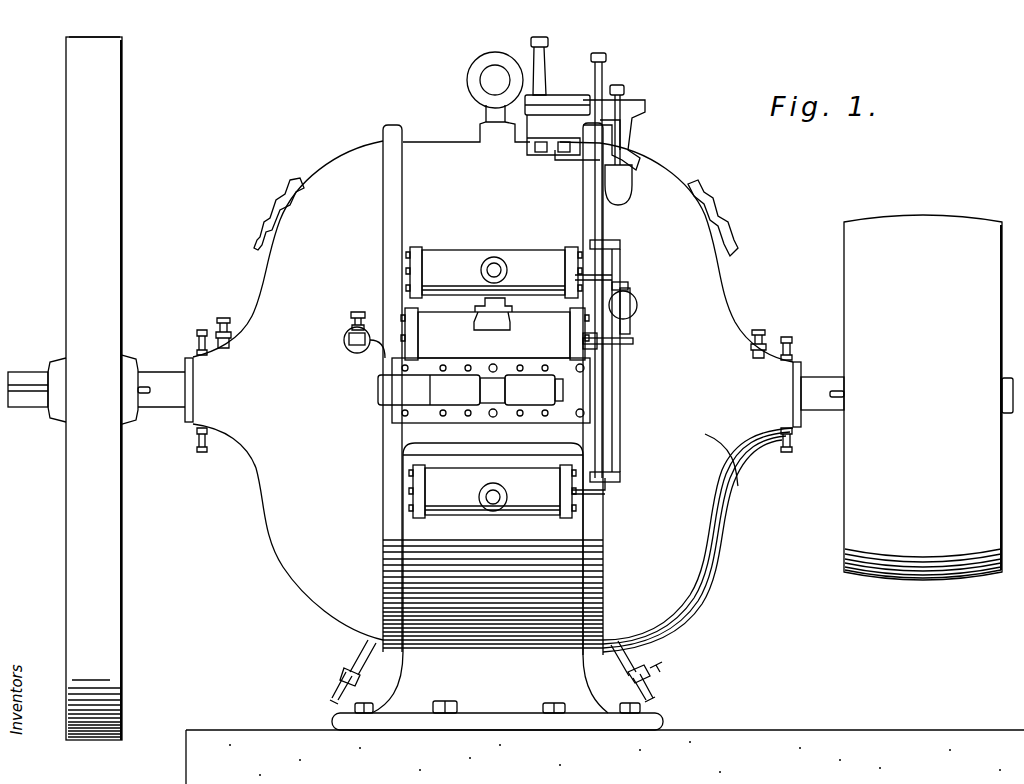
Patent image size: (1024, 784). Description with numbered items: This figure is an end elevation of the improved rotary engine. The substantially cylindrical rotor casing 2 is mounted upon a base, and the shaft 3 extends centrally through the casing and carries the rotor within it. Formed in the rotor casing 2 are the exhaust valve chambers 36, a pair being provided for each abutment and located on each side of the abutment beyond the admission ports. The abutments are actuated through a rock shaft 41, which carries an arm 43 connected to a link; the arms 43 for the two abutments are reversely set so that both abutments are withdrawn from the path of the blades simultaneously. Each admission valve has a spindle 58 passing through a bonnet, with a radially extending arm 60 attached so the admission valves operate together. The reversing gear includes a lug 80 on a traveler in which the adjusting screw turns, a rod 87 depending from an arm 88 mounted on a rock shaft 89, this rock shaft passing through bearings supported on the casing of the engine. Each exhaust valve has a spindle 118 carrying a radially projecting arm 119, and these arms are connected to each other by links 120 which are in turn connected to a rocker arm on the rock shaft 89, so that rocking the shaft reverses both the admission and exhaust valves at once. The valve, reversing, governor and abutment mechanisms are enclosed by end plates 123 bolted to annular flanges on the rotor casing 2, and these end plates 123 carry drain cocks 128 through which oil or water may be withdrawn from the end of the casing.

The rotor casing 2 is at (495, 135).
The shaft 3 is at (170, 398).
The exhaust valve chambers 36 is at (516, 262).
The rock shaft 41 is at (378, 393).
The arm 43 is at (385, 358).
The spindle 58 is at (634, 342).
The radially extending arm 60 is at (637, 320).
The lug 80 is at (543, 62).
The rod 87 is at (606, 142).
The arm 88 is at (605, 96).
The rock shaft 89 is at (640, 108).
The spindle 118 is at (583, 290).
The radially projecting arm 119 is at (615, 262).
The links 120 is at (600, 171).
The end plates 123 is at (748, 308).
The drain cocks 128 is at (350, 660).